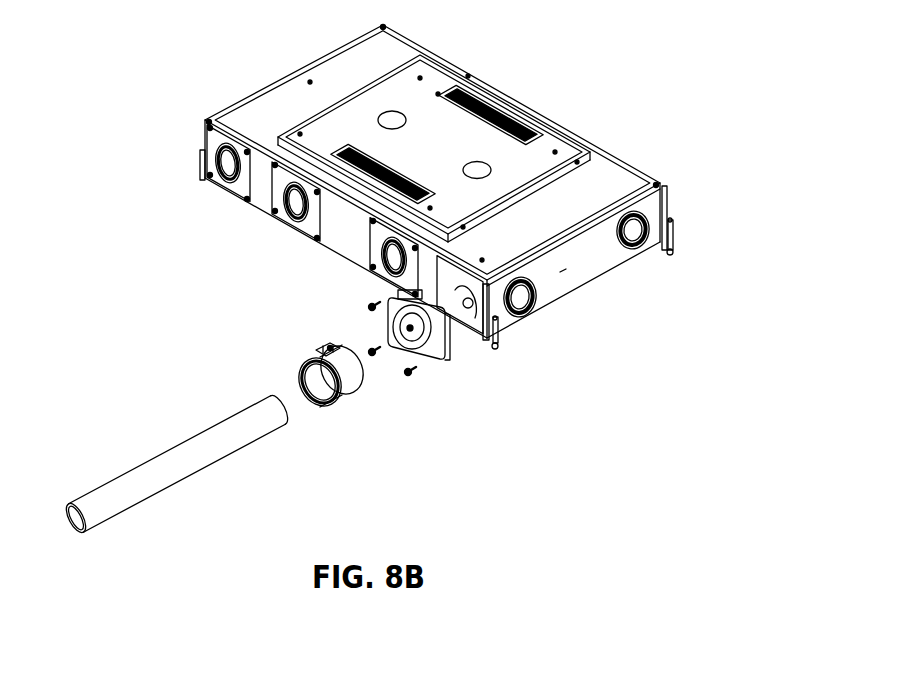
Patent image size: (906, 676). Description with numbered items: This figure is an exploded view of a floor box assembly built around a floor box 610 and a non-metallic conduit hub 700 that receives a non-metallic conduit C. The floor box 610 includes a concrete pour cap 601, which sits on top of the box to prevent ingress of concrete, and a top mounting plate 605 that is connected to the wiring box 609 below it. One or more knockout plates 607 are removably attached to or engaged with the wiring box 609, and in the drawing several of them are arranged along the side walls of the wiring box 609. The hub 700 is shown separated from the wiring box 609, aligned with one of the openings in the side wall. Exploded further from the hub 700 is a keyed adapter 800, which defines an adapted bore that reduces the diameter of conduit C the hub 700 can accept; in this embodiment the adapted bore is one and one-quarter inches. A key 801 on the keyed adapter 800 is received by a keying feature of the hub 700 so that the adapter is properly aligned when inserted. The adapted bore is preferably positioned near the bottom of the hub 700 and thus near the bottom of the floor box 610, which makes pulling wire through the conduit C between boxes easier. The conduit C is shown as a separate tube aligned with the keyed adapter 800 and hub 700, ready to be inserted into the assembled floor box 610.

The concrete pour cap 601 is at (303, 135).
The top mounting plate 605 is at (548, 248).
The knockout plates 607 is at (280, 230).
The wiring box 609 is at (556, 298).
The floor box 610 is at (418, 205).
The non-metallic conduit hub 700 is at (440, 355).
The keyed adapter 800 is at (345, 397).
The key 801 is at (330, 346).
The non-metallic conduit C is at (157, 452).